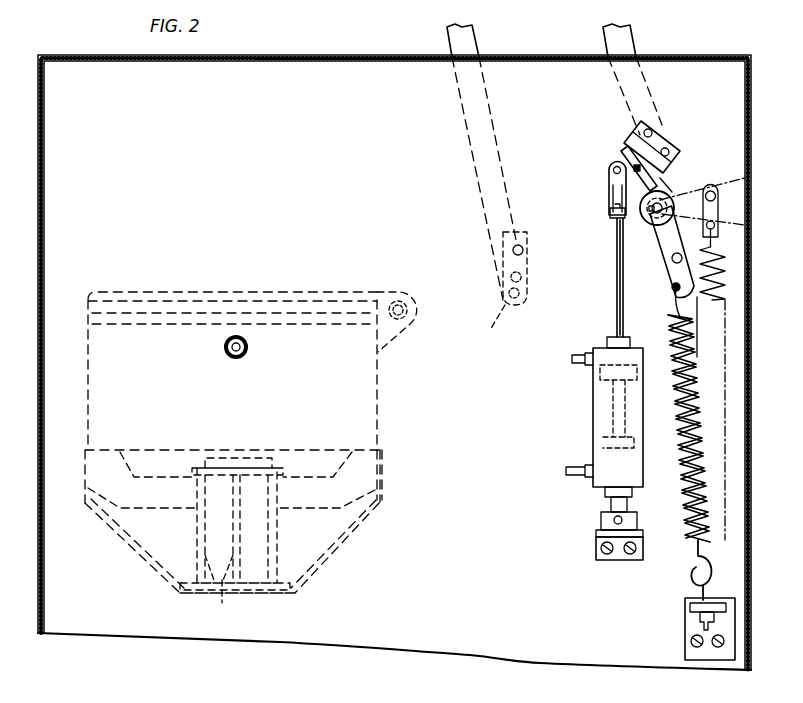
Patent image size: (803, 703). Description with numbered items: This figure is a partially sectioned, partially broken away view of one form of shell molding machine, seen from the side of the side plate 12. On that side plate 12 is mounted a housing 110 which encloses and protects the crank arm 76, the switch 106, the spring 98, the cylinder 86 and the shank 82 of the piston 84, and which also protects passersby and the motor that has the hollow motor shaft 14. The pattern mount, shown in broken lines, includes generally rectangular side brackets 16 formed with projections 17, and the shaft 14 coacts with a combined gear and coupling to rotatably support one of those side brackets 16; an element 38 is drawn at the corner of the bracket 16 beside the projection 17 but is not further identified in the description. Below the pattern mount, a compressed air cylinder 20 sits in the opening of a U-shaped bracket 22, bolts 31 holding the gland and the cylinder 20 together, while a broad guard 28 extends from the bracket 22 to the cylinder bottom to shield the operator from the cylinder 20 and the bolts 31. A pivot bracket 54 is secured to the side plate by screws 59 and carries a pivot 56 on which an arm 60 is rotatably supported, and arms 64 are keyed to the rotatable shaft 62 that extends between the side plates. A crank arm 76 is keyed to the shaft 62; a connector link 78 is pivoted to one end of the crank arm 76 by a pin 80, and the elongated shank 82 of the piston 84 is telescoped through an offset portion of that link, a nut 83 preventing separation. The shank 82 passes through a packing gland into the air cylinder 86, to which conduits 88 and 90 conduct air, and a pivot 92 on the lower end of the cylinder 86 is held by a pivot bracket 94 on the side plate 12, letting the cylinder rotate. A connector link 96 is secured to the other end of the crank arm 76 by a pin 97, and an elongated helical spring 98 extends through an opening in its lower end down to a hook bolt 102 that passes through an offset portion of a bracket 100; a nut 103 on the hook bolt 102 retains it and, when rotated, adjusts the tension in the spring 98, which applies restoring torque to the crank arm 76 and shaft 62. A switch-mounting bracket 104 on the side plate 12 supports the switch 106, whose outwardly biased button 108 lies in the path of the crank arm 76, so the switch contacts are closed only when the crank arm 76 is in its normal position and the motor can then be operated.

The side plate 12 is at (530, 664).
The hollow motor shaft 14 is at (246, 352).
The side brackets 16 is at (280, 290).
The projections 17 is at (410, 327).
The compressed air cylinder 20 is at (278, 538).
The bracket 22 is at (376, 500).
The guard 28 is at (338, 553).
The bolts 31 is at (219, 590).
The pivot 38 is at (405, 296).
The pivot bracket 54 is at (527, 238).
The pivot 56 is at (491, 327).
The screws 59 is at (548, 250).
The arms 60 is at (425, 46).
The rotatable shaft 62 is at (676, 200).
The arms 64 is at (574, 46).
The crank arm 76 is at (270, 458).
The connector link 78 is at (609, 192).
The pin 80 is at (619, 190).
The shank 82 is at (616, 312).
The nut 83 is at (590, 175).
The piston 84 is at (592, 430).
The air cylinder 86 is at (605, 478).
The conduit 88 is at (578, 473).
The conduit 90 is at (580, 364).
The pivot 92 is at (610, 521).
The pivot bracket 94 is at (612, 562).
The connector link 96 is at (720, 231).
The pin 97 is at (722, 193).
The helical spring 98 is at (727, 291).
The bracket 100 is at (692, 608).
The hook bolt 102 is at (698, 578).
The nut 103 is at (704, 621).
The switch-mounting bracket 104 is at (666, 140).
The switch 106 is at (621, 150).
The button 108 is at (665, 190).
The housing 110 is at (44, 200).